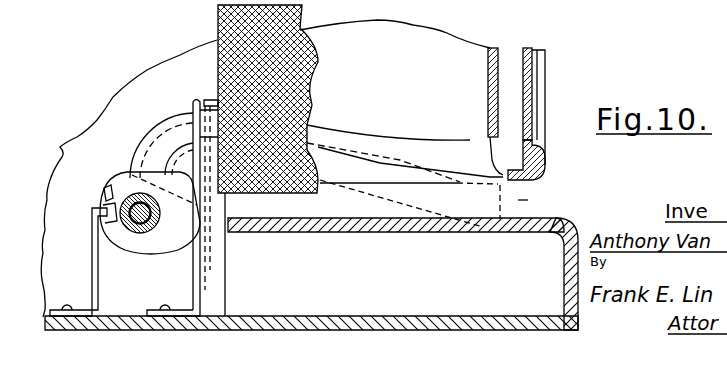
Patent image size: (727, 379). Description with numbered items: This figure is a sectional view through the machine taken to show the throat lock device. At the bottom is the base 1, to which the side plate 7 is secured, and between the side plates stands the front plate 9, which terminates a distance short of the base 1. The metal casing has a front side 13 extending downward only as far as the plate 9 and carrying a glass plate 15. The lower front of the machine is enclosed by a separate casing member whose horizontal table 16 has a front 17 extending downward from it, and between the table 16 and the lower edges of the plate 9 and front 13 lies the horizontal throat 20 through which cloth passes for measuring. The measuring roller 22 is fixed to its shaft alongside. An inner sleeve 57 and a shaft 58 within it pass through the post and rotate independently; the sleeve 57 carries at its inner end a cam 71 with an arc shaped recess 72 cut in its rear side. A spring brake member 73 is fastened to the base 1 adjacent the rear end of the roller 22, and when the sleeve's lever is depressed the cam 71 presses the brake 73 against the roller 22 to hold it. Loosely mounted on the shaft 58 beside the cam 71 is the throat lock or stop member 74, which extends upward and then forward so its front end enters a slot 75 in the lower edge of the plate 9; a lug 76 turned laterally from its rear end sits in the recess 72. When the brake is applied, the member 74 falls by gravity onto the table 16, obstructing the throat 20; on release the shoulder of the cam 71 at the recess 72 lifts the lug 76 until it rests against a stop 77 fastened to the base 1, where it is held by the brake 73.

The base 1 is at (322, 324).
The side plate 7 is at (88, 133).
The front plate 9 is at (491, 65).
The front side of casing 13 is at (546, 163).
The glass plate 15 is at (533, 78).
The table 16 is at (413, 227).
The front of lower casing member 17 is at (571, 255).
The throat 20 is at (523, 200).
The measuring roller 22 is at (218, 13).
The inner sleeve 57 is at (150, 230).
The shaft 58 is at (139, 222).
The cam 71 is at (133, 177).
The arc shaped recess 72 is at (103, 225).
The spring brake member 73 is at (195, 102).
The throat lock or stop member 74 is at (165, 118).
The slot 75 is at (470, 140).
The lug 76 is at (105, 197).
The stop 77 is at (95, 248).